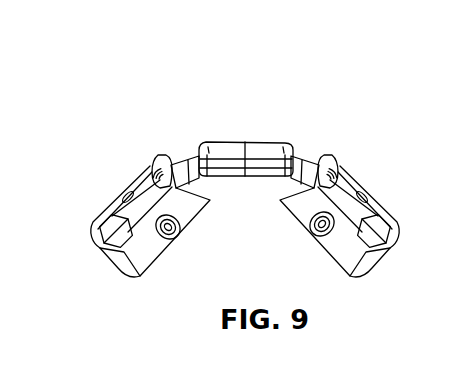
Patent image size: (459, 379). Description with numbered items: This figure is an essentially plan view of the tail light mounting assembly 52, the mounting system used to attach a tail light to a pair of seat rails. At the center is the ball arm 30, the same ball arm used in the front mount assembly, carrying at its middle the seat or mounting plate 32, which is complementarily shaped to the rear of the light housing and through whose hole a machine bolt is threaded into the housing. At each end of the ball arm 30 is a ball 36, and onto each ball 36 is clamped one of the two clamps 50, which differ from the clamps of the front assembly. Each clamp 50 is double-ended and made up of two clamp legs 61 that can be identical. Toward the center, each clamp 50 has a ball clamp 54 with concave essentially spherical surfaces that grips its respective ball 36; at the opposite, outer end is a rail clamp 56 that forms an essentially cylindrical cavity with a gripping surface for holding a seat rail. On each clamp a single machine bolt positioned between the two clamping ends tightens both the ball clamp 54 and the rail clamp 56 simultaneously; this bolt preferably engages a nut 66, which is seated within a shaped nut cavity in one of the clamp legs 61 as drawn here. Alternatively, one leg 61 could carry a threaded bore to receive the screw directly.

The tail light mounting assembly 52 is at (303, 61).
The ball arm 30 is at (286, 128).
The mounting plate 32 is at (227, 150).
The ball 36 is at (180, 170).
The ball clamp 54 is at (162, 156).
The clamp 50 is at (115, 181).
The clamp leg 61 is at (157, 157).
The rail clamp 56 is at (127, 262).
The nut 66 is at (173, 236).